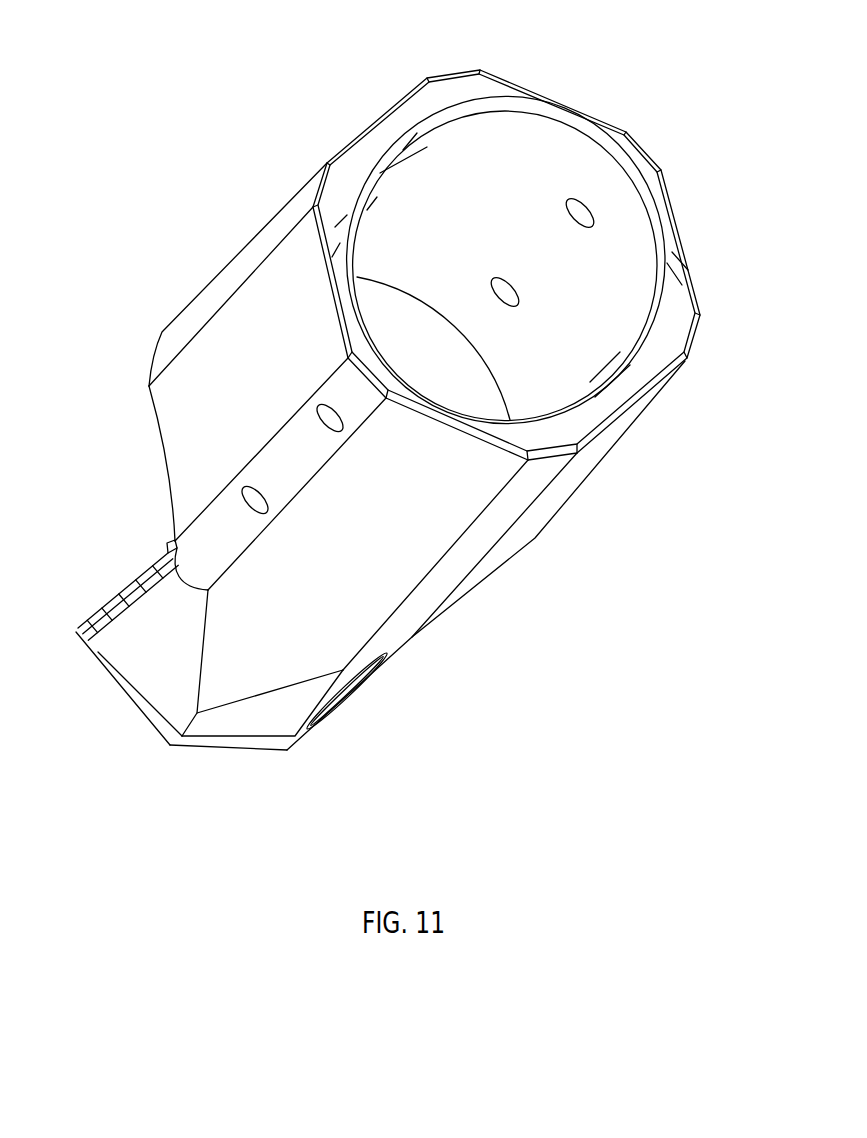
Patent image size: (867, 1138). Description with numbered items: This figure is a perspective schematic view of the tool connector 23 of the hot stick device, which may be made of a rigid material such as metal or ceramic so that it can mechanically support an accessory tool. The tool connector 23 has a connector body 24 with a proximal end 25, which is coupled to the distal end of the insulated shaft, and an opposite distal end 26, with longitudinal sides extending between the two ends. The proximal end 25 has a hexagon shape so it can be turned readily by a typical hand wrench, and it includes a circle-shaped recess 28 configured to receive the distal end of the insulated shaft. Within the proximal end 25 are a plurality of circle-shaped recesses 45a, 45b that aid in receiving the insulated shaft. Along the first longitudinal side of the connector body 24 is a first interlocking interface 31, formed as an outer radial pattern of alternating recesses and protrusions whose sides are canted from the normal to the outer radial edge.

The tool connector 23 is at (642, 90).
The connector body 24 is at (545, 552).
The proximal end 25 is at (668, 273).
The distal end 26 is at (293, 750).
The circle-shaped recess 28 is at (476, 244).
The first interlocking interface 31 is at (150, 558).
The circle-shaped recess 45a is at (500, 280).
The circle-shaped recess 45b is at (573, 198).